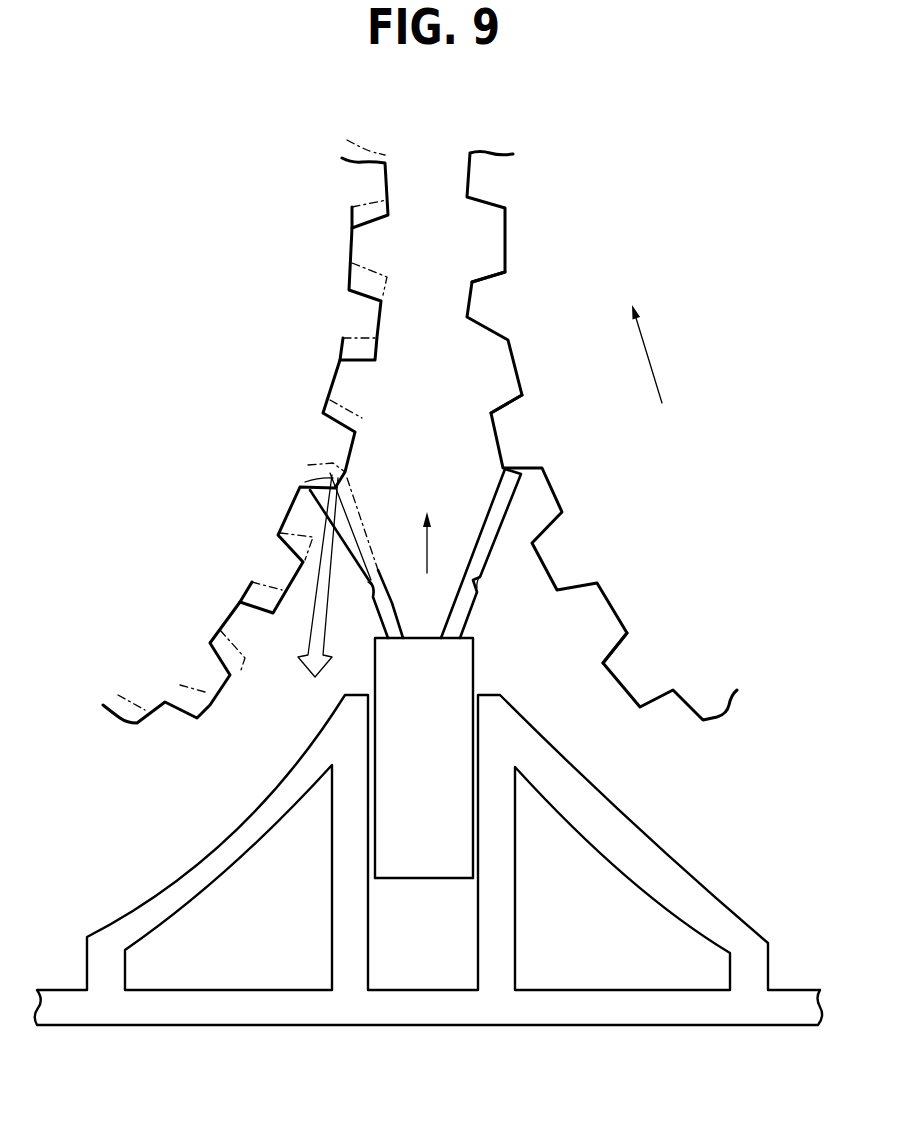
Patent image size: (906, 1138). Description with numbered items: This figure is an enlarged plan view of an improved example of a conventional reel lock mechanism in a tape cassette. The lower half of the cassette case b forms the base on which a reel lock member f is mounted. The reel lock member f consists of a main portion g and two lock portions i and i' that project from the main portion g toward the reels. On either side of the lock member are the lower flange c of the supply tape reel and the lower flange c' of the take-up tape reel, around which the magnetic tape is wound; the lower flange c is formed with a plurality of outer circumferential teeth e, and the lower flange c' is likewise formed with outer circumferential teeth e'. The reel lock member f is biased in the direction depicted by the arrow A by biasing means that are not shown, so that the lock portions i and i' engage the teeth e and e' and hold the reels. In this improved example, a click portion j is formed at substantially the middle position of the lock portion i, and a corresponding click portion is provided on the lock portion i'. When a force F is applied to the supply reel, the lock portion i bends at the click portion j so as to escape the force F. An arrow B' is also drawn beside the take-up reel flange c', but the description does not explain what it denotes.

The lower half of cassette case b is at (623, 1013).
The reel lock member f is at (475, 665).
The main portion g is at (430, 873).
The lower flange of supply tape reel c is at (266, 431).
The outer circumferential teeth e is at (268, 479).
The lower flange of take-up tape reel c' is at (584, 436).
The outer circumferential teeth e' is at (526, 486).
The lock portion i is at (318, 541).
The lock portion i' is at (520, 549).
The click portion j is at (373, 583).
The force F is at (321, 576).
The arrow indicating biasing direction A is at (427, 561).
The direction arrow B' is at (658, 370).